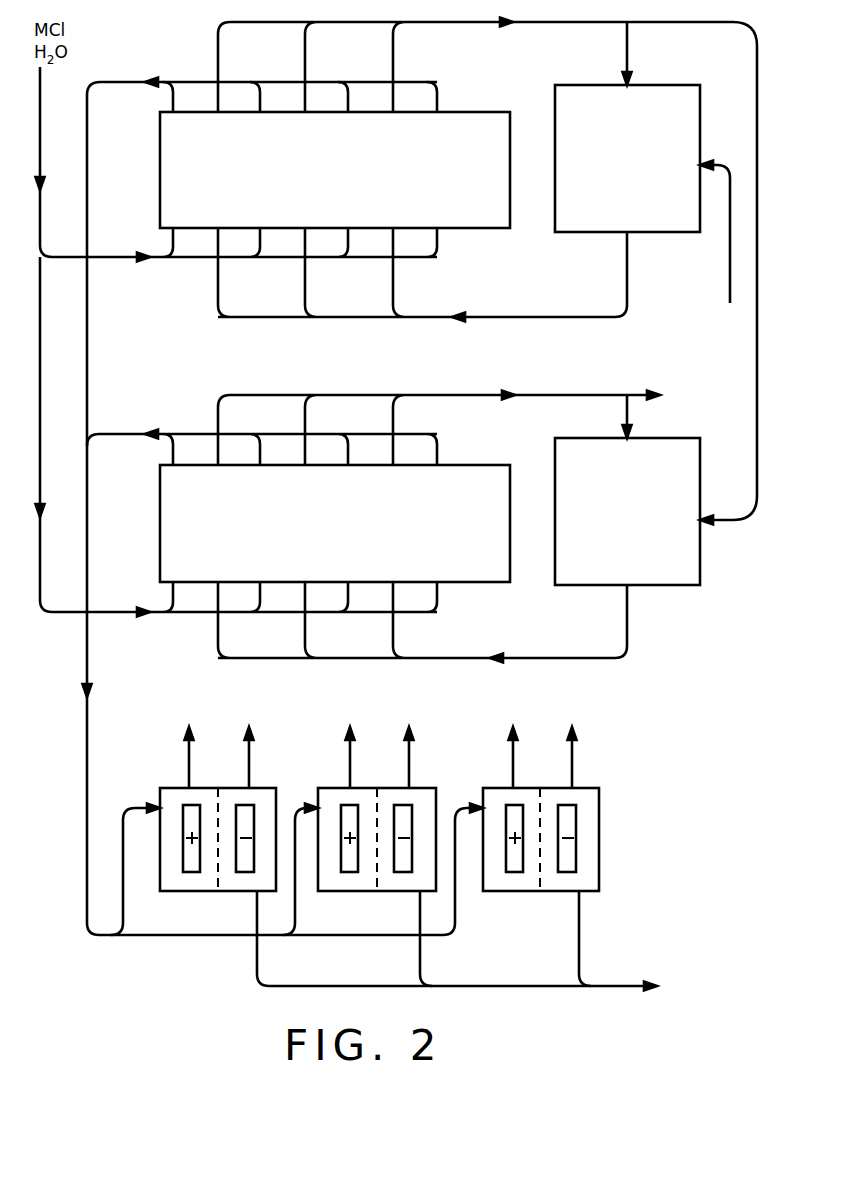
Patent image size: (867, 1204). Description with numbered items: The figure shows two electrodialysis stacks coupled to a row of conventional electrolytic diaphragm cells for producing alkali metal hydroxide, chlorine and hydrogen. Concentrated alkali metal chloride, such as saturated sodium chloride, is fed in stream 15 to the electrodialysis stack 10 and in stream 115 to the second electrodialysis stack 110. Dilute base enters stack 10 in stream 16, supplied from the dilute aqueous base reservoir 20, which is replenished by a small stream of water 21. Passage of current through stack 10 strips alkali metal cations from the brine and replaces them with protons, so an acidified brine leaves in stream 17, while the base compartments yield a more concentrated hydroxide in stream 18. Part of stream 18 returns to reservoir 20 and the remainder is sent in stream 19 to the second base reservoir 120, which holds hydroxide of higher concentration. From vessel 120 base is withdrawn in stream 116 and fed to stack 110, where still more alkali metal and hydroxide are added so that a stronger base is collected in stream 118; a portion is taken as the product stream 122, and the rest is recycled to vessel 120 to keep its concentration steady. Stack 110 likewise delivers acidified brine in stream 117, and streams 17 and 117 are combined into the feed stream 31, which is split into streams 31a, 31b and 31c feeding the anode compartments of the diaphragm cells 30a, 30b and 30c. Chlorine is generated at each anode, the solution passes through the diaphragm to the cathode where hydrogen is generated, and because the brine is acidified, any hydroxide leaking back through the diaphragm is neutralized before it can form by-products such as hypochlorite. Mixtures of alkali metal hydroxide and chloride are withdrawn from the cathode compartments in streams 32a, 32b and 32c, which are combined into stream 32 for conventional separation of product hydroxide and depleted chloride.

The electrodialysis stack 10 is at (344, 181).
The alkali metal chloride feed stream 15 is at (112, 259).
The dilute base stream 16 is at (505, 316).
The acidified brine stream 17 is at (126, 85).
The base stream 18 is at (470, 26).
The base stream to second reservoir 19 is at (757, 75).
The dilute aqueous base reservoir 20 is at (638, 163).
The water stream 21 is at (730, 248).
The second electrodialysis stack 110 is at (356, 533).
The alkali metal chloride feed stream 115 is at (108, 610).
The base feed stream 116 is at (455, 656).
The acidified brine stream 117 is at (127, 432).
The concentrated base stream 118 is at (478, 392).
The second base reservoir 120 is at (641, 518).
The product stream 122 is at (632, 393).
The diaphragm electrolytic cell 30a is at (165, 788).
The diaphragm electrolytic cell 30b is at (330, 788).
The diaphragm electrolytic cell 30c is at (488, 788).
The combined acidified brine feed stream 31 is at (90, 735).
The acidified brine feed stream 31a is at (128, 898).
The acidified brine feed stream 31b is at (298, 898).
The acidified brine feed stream 31c is at (457, 898).
The combined cell effluent stream 32 is at (616, 992).
The cathode effluent stream 32a is at (255, 955).
The cathode effluent stream 32b is at (420, 955).
The cathode effluent stream 32c is at (582, 920).